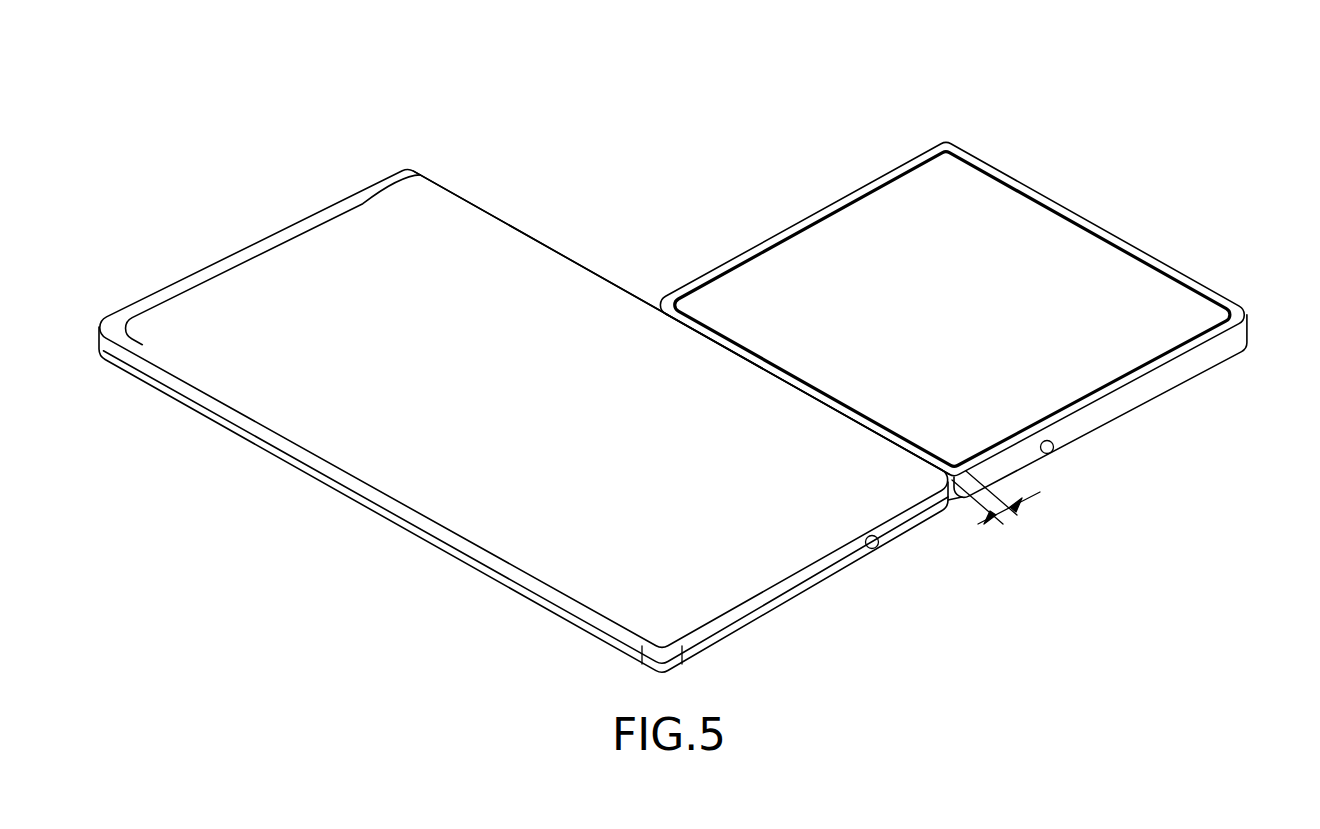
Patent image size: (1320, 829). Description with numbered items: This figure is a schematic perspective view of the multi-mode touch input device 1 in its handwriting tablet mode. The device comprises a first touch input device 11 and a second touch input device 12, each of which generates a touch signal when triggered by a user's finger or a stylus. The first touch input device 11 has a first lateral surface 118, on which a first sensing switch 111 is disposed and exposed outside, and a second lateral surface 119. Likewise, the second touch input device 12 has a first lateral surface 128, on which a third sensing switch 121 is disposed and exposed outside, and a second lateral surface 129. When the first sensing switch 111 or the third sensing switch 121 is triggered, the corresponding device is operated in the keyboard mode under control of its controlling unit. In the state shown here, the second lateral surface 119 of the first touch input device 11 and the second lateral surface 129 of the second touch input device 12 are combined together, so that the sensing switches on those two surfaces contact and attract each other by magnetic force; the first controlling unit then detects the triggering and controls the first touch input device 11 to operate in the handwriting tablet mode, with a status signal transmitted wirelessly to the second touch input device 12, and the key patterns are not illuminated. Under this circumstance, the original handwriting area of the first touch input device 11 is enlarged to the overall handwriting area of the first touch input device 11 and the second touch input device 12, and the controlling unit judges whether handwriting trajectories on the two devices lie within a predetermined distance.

The multi-mode touch input device 1 is at (464, 93).
The first touch input device 11 is at (523, 421).
The second touch input device 12 is at (953, 324).
The first sensing switch 111 is at (880, 550).
The first lateral surface 118 is at (773, 595).
The second lateral surface 119 is at (598, 273).
The third sensing switch 121 is at (1054, 450).
The first lateral surface 128 is at (1147, 373).
The second lateral surface 129 is at (805, 389).